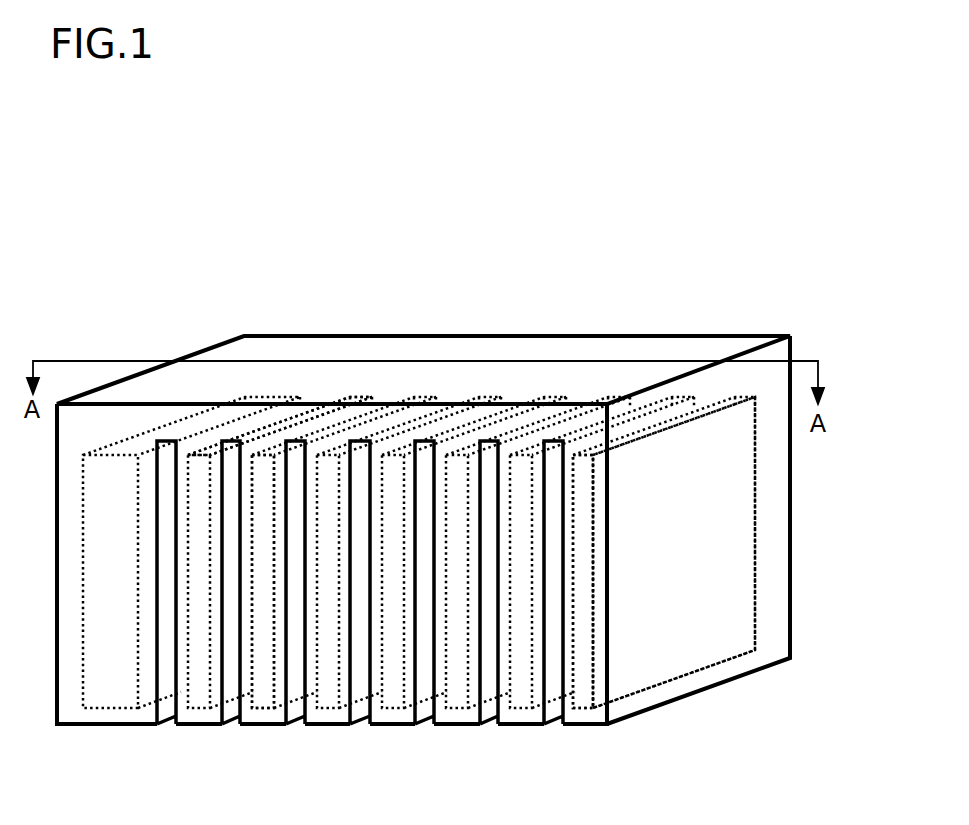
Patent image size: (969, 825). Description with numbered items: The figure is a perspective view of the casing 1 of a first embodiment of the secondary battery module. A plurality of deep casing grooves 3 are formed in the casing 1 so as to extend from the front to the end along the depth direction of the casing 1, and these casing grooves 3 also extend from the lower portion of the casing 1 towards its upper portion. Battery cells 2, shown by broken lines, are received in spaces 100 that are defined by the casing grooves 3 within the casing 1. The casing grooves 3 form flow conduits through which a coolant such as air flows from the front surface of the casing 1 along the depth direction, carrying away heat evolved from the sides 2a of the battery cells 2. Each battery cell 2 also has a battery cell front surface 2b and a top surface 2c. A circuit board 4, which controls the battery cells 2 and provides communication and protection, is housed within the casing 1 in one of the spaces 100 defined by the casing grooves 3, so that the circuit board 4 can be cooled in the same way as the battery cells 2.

The casing 1 is at (708, 337).
The battery cell 2 is at (661, 433).
The battery cell side surface 2a is at (678, 645).
The battery cell front surface 2b is at (583, 687).
The top surface of battery cell 2c is at (284, 427).
The casing groove 3 is at (168, 725).
The circuit board 4 is at (197, 423).
The space 100 is at (260, 712).